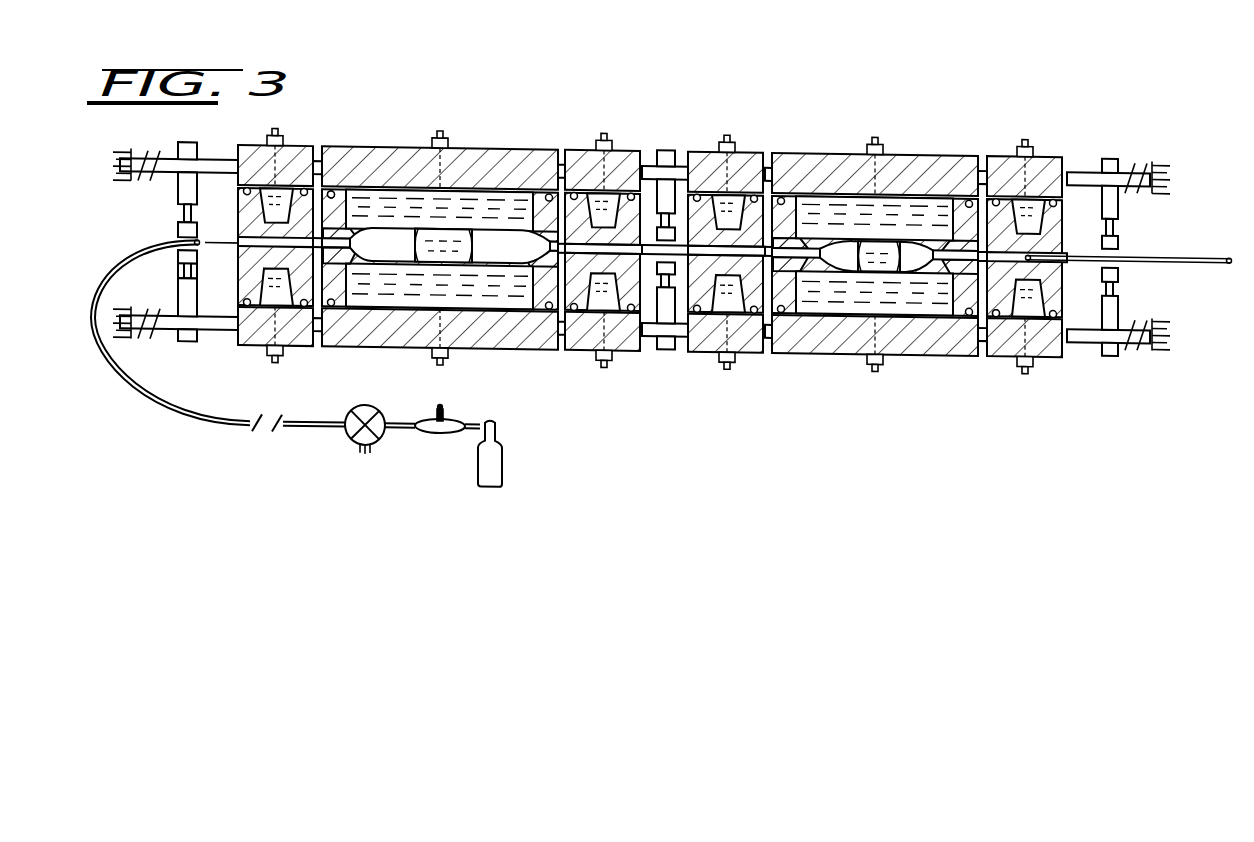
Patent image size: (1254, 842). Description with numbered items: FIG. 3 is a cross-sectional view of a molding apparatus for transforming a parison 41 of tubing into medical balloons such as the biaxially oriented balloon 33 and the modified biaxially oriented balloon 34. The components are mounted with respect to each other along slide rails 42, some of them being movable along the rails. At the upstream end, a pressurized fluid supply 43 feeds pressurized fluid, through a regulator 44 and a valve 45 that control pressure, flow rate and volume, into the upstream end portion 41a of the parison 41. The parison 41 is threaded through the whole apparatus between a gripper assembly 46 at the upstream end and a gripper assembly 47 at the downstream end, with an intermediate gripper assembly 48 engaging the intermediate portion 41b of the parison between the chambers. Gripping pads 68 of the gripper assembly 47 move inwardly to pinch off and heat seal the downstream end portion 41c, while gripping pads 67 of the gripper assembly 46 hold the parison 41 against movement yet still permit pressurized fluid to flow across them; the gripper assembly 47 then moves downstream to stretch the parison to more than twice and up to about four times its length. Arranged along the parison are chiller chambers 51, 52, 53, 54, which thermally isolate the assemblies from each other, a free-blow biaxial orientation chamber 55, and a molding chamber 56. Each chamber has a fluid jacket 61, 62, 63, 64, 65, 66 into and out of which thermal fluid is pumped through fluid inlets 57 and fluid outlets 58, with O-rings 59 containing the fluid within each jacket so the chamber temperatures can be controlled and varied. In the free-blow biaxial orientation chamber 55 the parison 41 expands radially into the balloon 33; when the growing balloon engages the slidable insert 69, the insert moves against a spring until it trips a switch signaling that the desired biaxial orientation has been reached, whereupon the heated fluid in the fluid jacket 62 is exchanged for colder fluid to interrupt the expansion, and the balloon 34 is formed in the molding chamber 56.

The biaxially oriented balloon 33 is at (440, 238).
The modified biaxially oriented balloon 34 is at (872, 244).
The parison 41 is at (146, 398).
The inlet end portion of tubing 41a is at (195, 242).
The intermediate portion of tubing 41b is at (655, 250).
The outlet end portion of tubing 41c is at (1186, 249).
The slide rails 42 is at (177, 160).
The pressurized fluid supply 43 is at (503, 460).
The regulator 44 is at (441, 431).
The valve 45 is at (371, 448).
The gripper assembly 46 is at (190, 146).
The gripper assembly 47 is at (1110, 146).
The intermediate gripper assembly 48 is at (666, 144).
The chiller chamber 51 is at (297, 148).
The chiller chamber 52 is at (578, 145).
The chiller chamber 53 is at (745, 145).
The chiller chamber 54 is at (1045, 146).
The free-blow biaxial orientation chamber 55 is at (462, 145).
The molding chamber 56 is at (905, 145).
The fluid inlet 57 is at (274, 146).
The fluid outlet 58 is at (285, 360).
The O-ring 59 is at (332, 189).
The fluid jacket 61 is at (287, 216).
The fluid jacket 62 is at (437, 212).
The fluid jacket 63 is at (603, 251).
The fluid jacket 64 is at (726, 253).
The fluid jacket 65 is at (879, 214).
The fluid jacket 66 is at (1012, 207).
The gripping pads 67 is at (180, 228).
The gripping pads 68 is at (1118, 229).
The slidable insert 69 is at (352, 263).